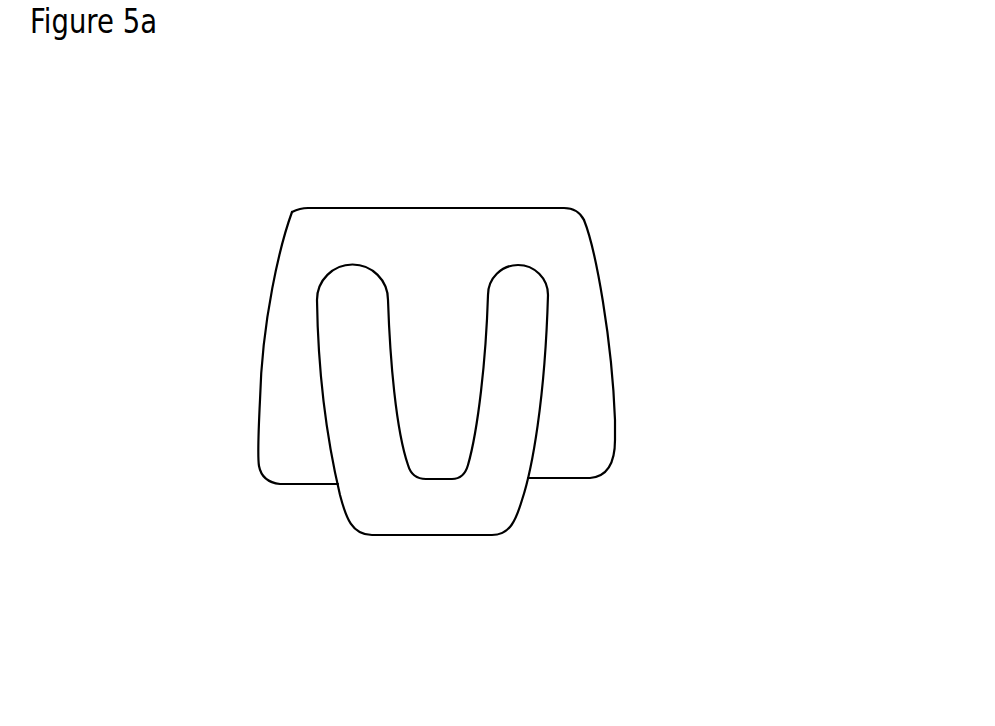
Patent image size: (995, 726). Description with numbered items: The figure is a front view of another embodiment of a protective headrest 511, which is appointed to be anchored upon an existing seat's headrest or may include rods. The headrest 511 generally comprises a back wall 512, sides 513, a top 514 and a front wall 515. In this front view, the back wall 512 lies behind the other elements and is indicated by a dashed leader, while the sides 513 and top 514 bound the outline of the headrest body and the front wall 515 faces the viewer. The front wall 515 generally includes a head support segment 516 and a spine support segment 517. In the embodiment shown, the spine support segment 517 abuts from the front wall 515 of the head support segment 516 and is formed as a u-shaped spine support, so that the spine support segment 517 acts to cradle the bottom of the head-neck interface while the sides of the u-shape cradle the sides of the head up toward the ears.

The protective headrest 511 is at (435, 306).
The back wall 512 is at (616, 422).
The sides 513 is at (603, 331).
The top 514 is at (410, 217).
The front wall 515 is at (293, 400).
The head support segment 516 is at (430, 423).
The spine support segment 517 is at (393, 502).